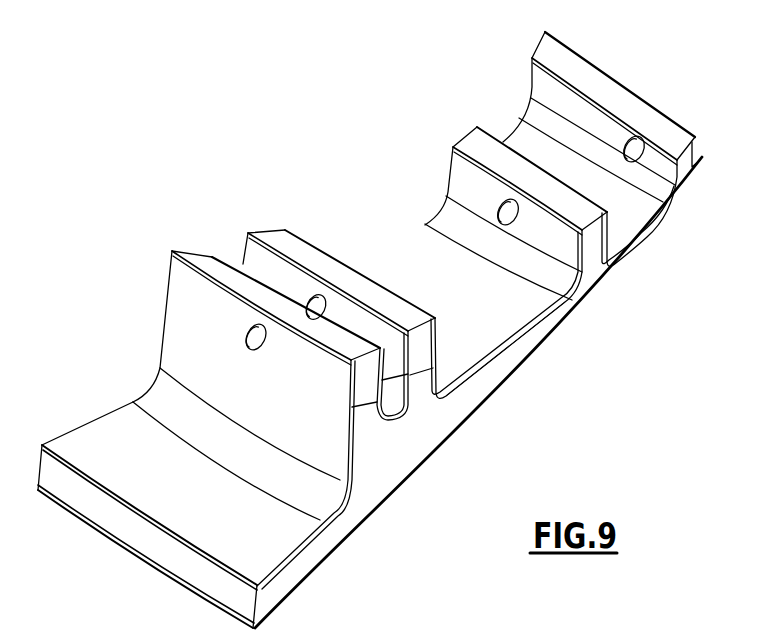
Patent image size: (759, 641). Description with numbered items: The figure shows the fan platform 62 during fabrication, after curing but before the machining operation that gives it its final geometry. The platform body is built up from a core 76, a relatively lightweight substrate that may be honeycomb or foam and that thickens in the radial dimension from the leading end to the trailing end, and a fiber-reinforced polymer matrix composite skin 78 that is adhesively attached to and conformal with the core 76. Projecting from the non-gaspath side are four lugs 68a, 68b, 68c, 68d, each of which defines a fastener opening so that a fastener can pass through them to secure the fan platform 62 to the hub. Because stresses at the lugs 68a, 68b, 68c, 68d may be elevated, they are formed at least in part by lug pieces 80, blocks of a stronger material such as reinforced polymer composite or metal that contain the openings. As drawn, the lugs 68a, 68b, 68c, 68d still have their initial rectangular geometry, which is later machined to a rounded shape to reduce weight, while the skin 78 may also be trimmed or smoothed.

The fan platform 62 is at (105, 342).
The lug 68a is at (637, 80).
The lug 68b is at (490, 126).
The lug 68c is at (320, 236).
The lug 68d is at (229, 236).
The core 76 is at (408, 447).
The fiber-reinforced polymer matrix composite skin 78 is at (490, 328).
The lug pieces 80 is at (197, 253).